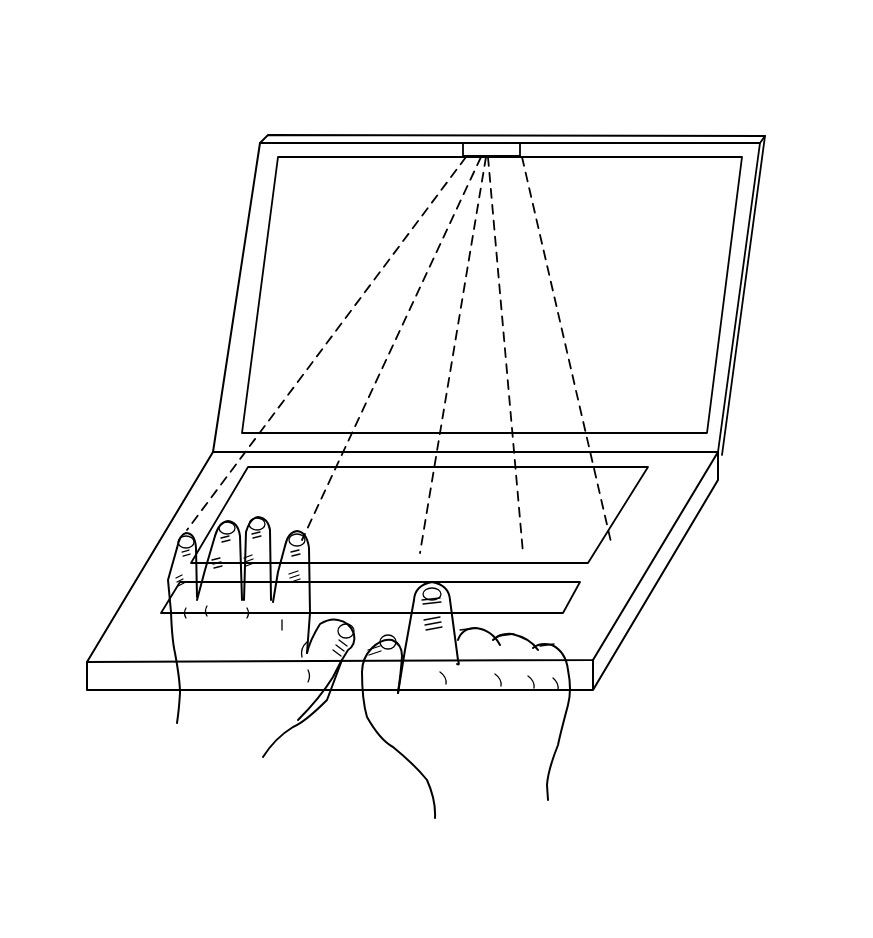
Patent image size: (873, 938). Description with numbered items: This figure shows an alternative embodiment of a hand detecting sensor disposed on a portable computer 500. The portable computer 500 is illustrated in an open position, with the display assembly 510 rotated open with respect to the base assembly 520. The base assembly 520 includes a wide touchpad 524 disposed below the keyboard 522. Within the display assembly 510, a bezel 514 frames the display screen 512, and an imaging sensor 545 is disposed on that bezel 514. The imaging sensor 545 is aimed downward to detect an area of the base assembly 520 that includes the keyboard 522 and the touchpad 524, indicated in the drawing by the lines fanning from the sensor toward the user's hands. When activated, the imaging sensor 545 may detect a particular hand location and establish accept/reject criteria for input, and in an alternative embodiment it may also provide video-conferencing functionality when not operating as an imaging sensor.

The portable computer 500 is at (240, 78).
The display assembly 510 is at (228, 276).
The display screen 512 is at (492, 295).
The bezel 514 is at (752, 157).
The imaging sensor 545 is at (486, 150).
The base assembly 520 is at (130, 545).
The keyboard 522 is at (578, 522).
The wide touchpad 524 is at (545, 600).